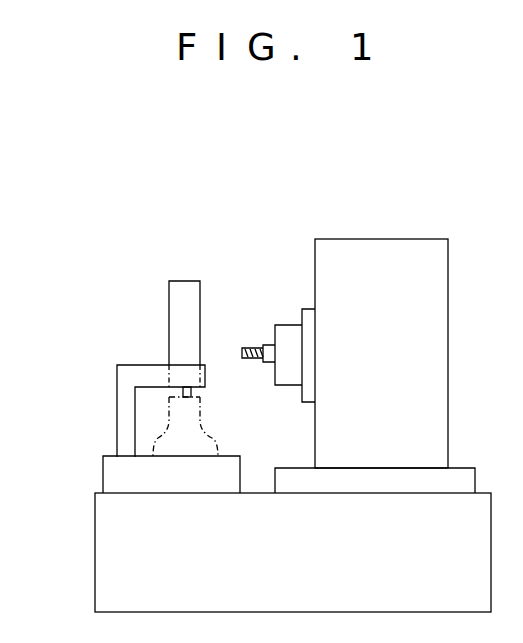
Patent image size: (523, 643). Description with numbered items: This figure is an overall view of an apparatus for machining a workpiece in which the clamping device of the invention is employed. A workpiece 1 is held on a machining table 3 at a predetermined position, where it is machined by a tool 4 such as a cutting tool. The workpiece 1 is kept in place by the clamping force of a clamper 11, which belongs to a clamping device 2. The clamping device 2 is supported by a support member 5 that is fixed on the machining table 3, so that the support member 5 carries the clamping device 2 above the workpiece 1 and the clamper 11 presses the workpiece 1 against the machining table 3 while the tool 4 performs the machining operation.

The workpiece 1 is at (173, 426).
The clamping device 2 is at (172, 307).
The machining table 3 is at (117, 477).
The tool 4 is at (252, 347).
The support member 5 is at (123, 377).
The clamper 11 is at (183, 393).